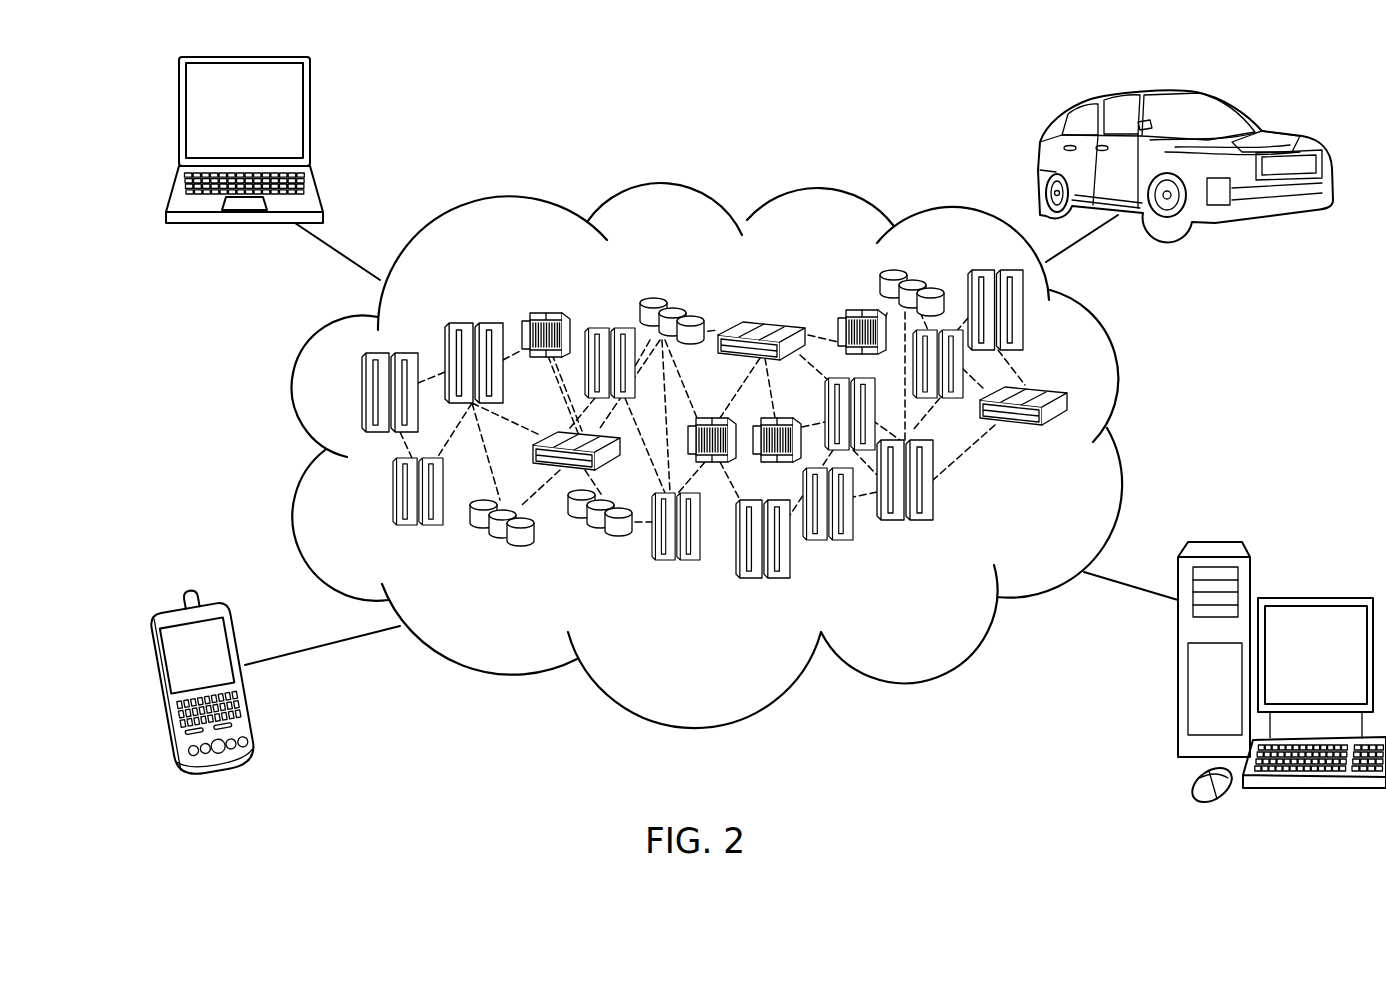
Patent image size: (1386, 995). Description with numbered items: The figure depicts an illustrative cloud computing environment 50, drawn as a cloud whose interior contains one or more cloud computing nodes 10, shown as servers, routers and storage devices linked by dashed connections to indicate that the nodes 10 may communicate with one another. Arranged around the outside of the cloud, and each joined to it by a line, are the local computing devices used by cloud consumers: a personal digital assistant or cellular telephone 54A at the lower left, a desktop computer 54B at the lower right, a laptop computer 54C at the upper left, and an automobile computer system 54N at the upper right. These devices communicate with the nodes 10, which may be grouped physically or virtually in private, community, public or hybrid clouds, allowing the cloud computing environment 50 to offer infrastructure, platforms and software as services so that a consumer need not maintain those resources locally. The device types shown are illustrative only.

The cloud computing nodes 10 is at (1097, 453).
The cloud computing environment 50 is at (1118, 358).
The personal digital assistant (PDA) or cellular telephone 54A is at (155, 695).
The desktop computer 54B is at (1310, 597).
The laptop computer 54C is at (179, 118).
The automobile computer system 54N is at (1240, 112).